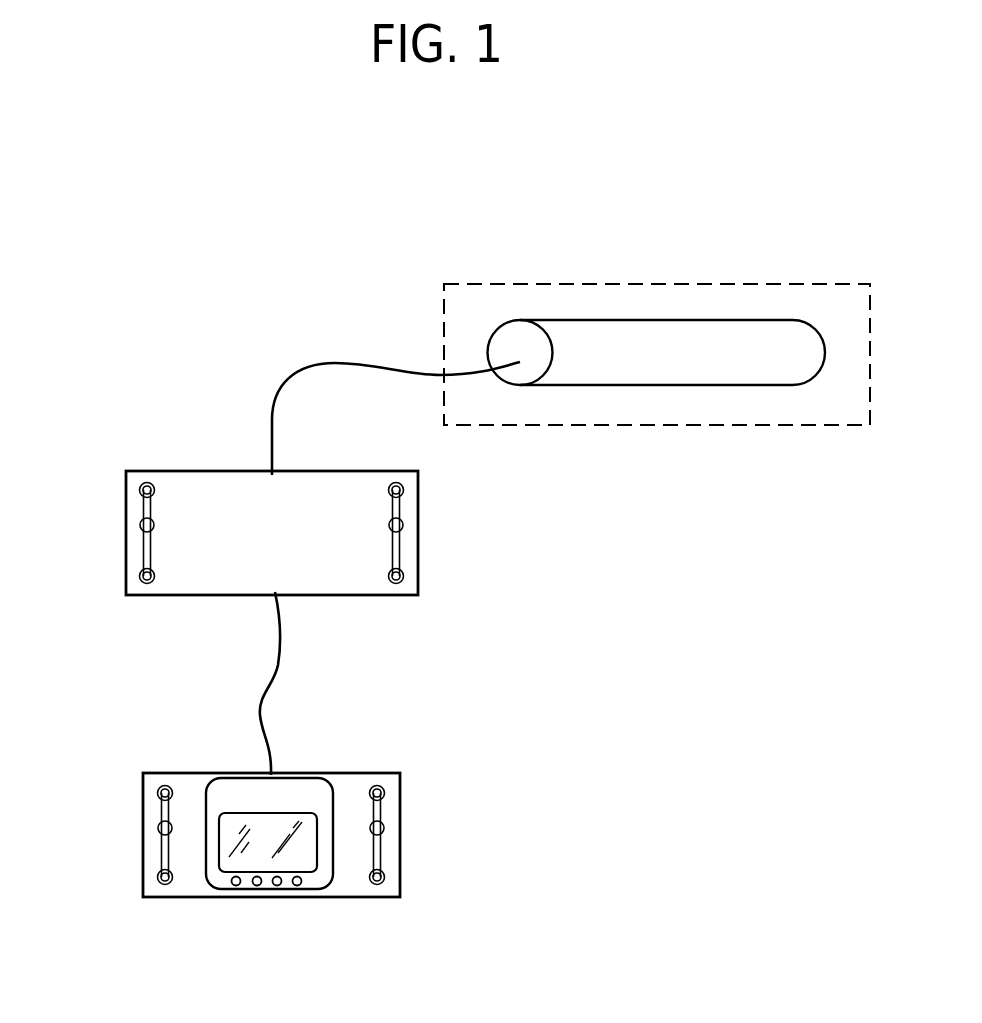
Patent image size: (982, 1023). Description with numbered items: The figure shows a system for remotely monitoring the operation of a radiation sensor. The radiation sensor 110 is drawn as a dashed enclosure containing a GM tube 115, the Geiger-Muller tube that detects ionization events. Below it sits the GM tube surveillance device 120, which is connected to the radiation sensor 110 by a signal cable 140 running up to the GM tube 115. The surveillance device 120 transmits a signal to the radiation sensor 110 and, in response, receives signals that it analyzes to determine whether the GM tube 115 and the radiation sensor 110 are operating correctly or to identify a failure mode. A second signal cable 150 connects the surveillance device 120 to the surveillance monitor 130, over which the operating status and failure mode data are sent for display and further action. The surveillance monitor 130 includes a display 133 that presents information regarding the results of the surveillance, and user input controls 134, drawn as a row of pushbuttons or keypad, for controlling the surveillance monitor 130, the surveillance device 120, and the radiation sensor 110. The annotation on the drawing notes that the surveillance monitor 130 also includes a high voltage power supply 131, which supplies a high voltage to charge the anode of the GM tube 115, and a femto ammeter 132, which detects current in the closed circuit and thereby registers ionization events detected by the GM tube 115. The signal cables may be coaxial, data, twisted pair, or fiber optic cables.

The radiation sensor 110 is at (702, 426).
The GM tube 115 is at (703, 320).
The GM tube surveillance device 120 is at (126, 520).
The surveillance monitor 130 is at (424, 859).
The high voltage power supply 131 is at (424, 792).
The femto ammeter 132 is at (636, 749).
The display 133 is at (302, 848).
The user input controls 134 is at (237, 886).
The signal cable 140 is at (287, 390).
The signal cable 150 is at (274, 670).